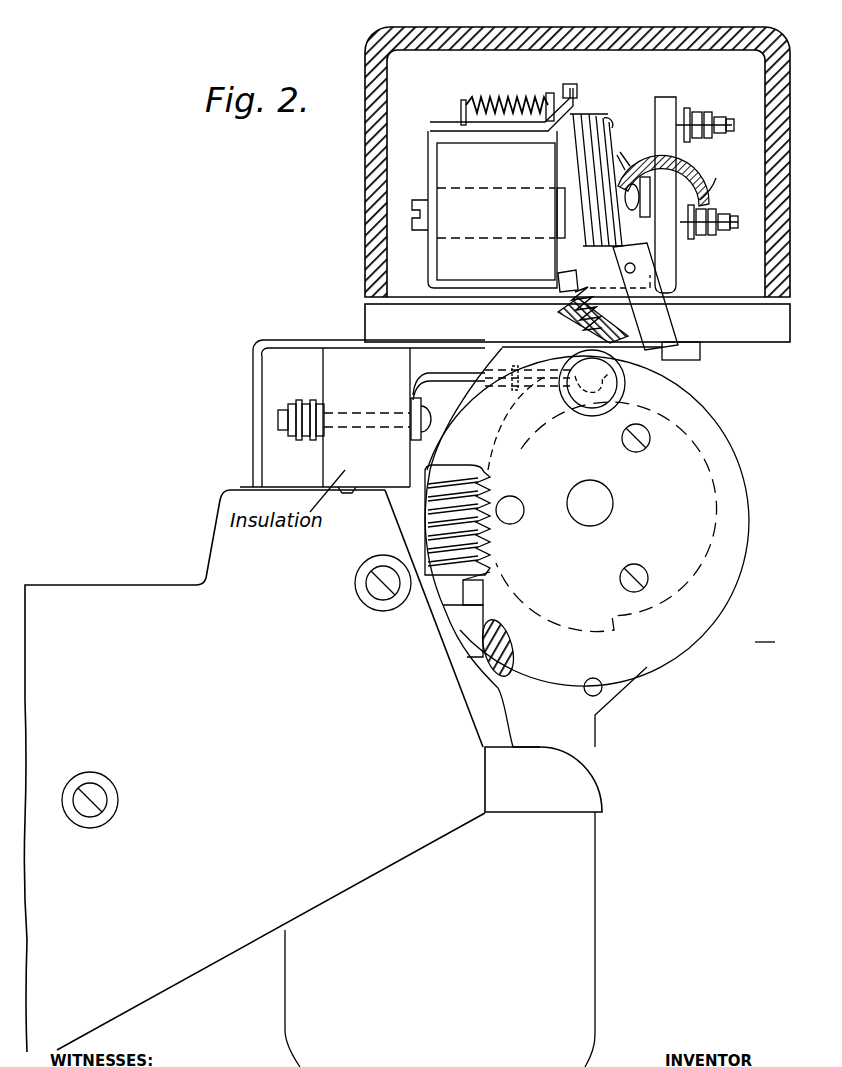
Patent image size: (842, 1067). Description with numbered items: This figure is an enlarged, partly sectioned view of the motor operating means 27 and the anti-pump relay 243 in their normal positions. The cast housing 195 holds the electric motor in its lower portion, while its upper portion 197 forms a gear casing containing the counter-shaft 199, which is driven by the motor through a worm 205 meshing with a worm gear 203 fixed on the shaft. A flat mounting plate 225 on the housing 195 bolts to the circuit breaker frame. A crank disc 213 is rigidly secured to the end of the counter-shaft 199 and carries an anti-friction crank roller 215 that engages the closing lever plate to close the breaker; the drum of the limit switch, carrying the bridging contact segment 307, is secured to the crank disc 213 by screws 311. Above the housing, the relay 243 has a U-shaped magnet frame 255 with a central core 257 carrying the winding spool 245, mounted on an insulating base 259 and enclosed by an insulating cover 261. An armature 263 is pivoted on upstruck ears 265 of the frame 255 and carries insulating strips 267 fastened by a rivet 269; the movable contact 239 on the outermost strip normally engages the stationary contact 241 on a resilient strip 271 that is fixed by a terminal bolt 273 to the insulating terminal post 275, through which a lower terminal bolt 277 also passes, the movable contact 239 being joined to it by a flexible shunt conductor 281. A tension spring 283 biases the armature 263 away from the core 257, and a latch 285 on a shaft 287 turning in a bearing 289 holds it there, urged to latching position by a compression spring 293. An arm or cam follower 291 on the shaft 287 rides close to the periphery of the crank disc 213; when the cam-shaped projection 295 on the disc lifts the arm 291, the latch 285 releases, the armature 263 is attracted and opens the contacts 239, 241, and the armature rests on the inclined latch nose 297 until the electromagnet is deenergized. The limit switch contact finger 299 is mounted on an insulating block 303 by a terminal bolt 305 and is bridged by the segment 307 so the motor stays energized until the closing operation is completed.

The electric motor operating means 27 is at (761, 631).
The cast housing 195 is at (604, 806).
The upper portion of the housing 197 is at (502, 658).
The counter-shaft 199 is at (614, 503).
The worm gear 203 is at (500, 568).
The worm 205 is at (482, 587).
The crank disc 213 is at (737, 445).
The anti-friction crank roller 215 is at (626, 392).
The mounting plate 225 is at (221, 955).
The movable contact 239 is at (628, 152).
The stationary contact 241 is at (648, 192).
The anti-pump relay 243 is at (612, 76).
The winding spool 245 is at (448, 156).
The U-shaped magnet frame 255 is at (430, 126).
The central core 257 is at (485, 238).
The base 259 is at (370, 316).
The cover 261 is at (472, 24).
The armature 263 is at (583, 114).
The upstruck ears 265 is at (560, 96).
The strips of insulating material 267 is at (600, 122).
The rivet 269 is at (616, 140).
The strip of resilient conducting material 271 is at (706, 162).
The terminal bolt 273 is at (720, 124).
The terminal post 275 is at (664, 104).
The terminal bolt 277 is at (722, 226).
The flexible shunt conductor 281 is at (710, 190).
The tension spring 283 is at (500, 88).
The latch 285 is at (578, 300).
The latch shaft 287 is at (636, 270).
The bearing 289 is at (652, 263).
The arm or cam follower 291 is at (672, 326).
The compression spring 293 is at (576, 330).
The cam-shaped projection 295 is at (492, 361).
The latch nose or surface 297 is at (558, 274).
The resilient spring contact finger 299 is at (524, 418).
The block of insulating material 303 is at (332, 368).
The terminal bolt 305 is at (278, 422).
The bridging contact segment 307 is at (600, 628).
The screws 311 is at (624, 448).